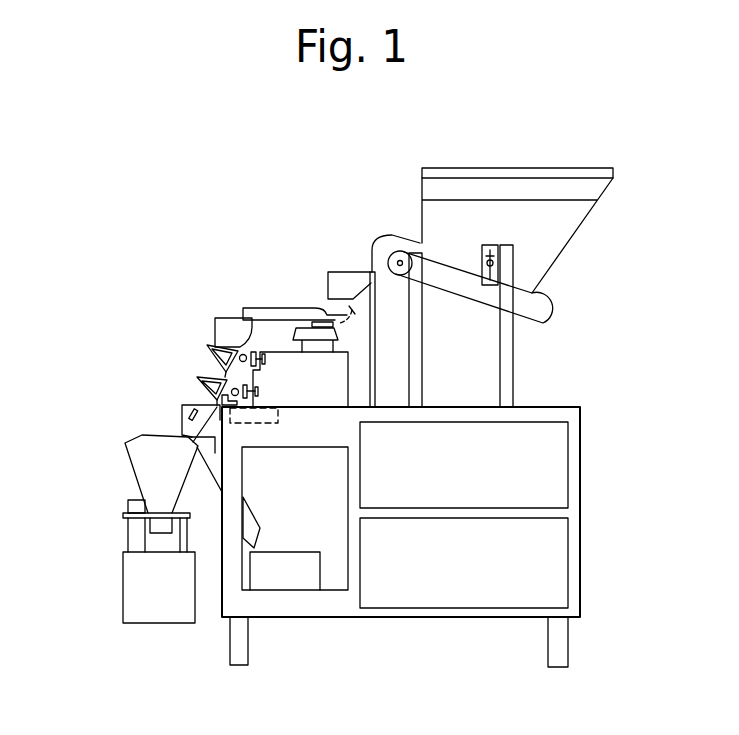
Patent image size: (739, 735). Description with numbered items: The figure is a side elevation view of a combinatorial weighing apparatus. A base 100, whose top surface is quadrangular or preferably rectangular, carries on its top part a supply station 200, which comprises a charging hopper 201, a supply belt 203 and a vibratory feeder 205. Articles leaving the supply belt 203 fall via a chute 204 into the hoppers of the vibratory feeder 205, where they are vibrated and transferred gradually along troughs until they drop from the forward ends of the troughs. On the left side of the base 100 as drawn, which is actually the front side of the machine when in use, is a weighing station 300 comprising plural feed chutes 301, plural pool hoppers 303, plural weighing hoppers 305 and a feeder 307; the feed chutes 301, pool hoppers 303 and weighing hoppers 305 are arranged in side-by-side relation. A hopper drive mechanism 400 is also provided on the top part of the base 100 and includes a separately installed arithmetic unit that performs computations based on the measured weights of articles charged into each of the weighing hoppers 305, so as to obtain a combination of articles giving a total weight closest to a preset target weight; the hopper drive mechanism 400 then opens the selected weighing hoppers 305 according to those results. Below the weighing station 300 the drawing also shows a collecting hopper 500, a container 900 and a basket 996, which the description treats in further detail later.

The base 100 is at (555, 445).
The supply station 200 is at (637, 173).
The charging hopper 201 is at (572, 212).
The supply belt 203 is at (556, 302).
The chute 204 is at (342, 282).
The vibratory feeder 205 is at (352, 310).
The weighing station 300 is at (105, 297).
The feed chutes 301 is at (227, 332).
The pool hoppers 303 is at (220, 358).
The weighing hoppers 305 is at (213, 380).
The feeder 307 is at (187, 413).
The hopper drive mechanism 400 is at (280, 360).
The collecting hopper 500 is at (145, 462).
The container 900 is at (155, 523).
The basket 996 is at (285, 573).